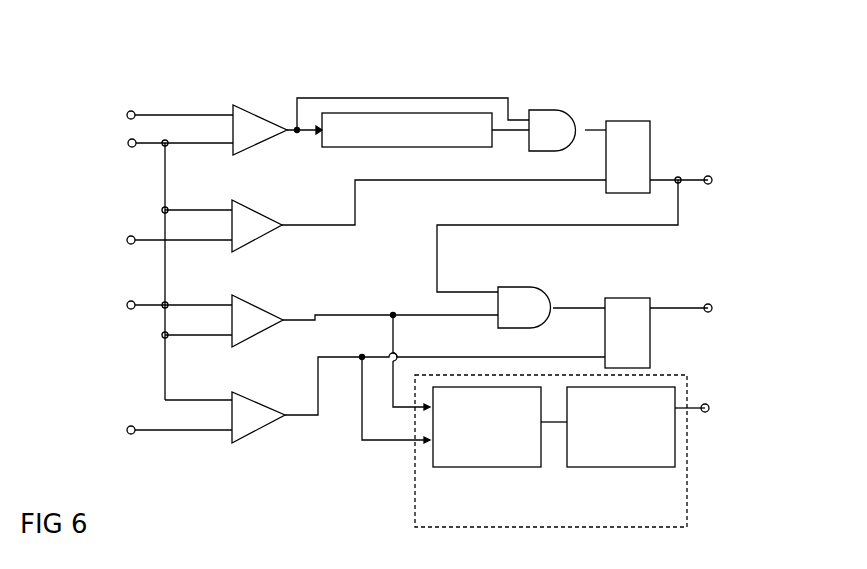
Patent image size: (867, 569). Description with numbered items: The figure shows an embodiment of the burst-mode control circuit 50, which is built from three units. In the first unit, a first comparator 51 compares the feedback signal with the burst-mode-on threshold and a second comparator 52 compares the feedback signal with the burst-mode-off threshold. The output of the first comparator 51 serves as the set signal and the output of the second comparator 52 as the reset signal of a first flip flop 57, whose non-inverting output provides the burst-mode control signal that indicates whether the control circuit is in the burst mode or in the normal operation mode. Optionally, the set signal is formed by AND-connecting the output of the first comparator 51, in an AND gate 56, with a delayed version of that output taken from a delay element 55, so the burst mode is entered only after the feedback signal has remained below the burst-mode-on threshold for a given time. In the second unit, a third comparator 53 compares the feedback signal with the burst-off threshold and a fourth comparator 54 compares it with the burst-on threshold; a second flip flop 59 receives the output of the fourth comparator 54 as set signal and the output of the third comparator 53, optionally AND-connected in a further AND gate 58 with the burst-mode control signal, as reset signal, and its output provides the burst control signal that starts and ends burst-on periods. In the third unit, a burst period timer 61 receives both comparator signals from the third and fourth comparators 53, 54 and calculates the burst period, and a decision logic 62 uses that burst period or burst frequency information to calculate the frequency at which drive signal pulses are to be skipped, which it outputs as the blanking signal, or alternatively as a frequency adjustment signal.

The burst-mode control circuit 50 is at (425, 55).
The first comparator 51 is at (252, 105).
The second comparator 52 is at (270, 215).
The third comparator 53 is at (268, 310).
The fourth comparator 54 is at (258, 397).
The delay element 55 is at (408, 147).
The AND gate 56 is at (556, 105).
The first flip flop 57 is at (623, 116).
The AND gate 58 is at (518, 283).
The second flip flop 59 is at (623, 297).
The burst period timer 61 is at (487, 467).
The decision logic 62 is at (617, 467).